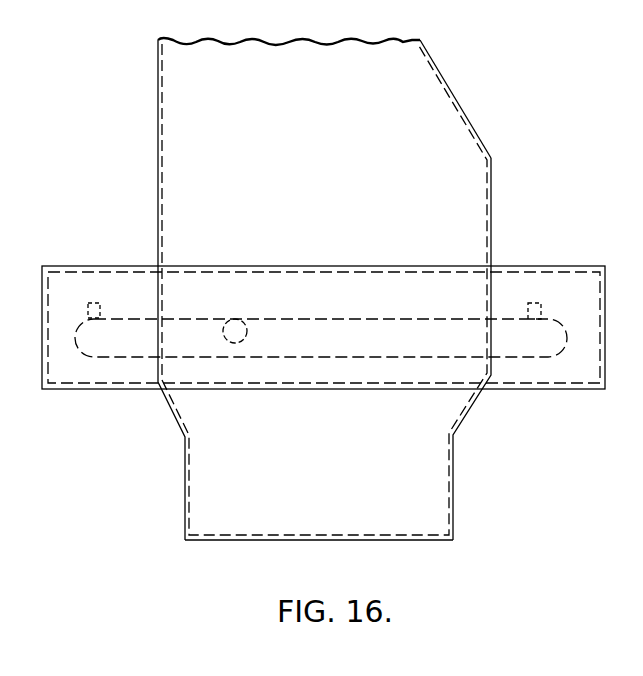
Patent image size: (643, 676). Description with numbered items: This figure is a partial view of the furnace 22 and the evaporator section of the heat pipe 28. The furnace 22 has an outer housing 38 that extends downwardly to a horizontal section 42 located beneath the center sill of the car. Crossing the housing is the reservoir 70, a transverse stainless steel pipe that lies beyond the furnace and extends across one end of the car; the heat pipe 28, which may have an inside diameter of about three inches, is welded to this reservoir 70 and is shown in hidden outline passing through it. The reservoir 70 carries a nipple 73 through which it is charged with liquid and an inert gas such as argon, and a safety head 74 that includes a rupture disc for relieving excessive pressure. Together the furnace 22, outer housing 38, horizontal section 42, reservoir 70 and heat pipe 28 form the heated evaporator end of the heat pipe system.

The furnace 22 is at (497, 227).
The outer housing 38 is at (460, 122).
The horizontal section 42 is at (430, 530).
The reservoir 70 is at (348, 326).
The heat pipe 28 is at (241, 321).
The safety head 74 is at (101, 303).
The nipple 73 is at (544, 306).